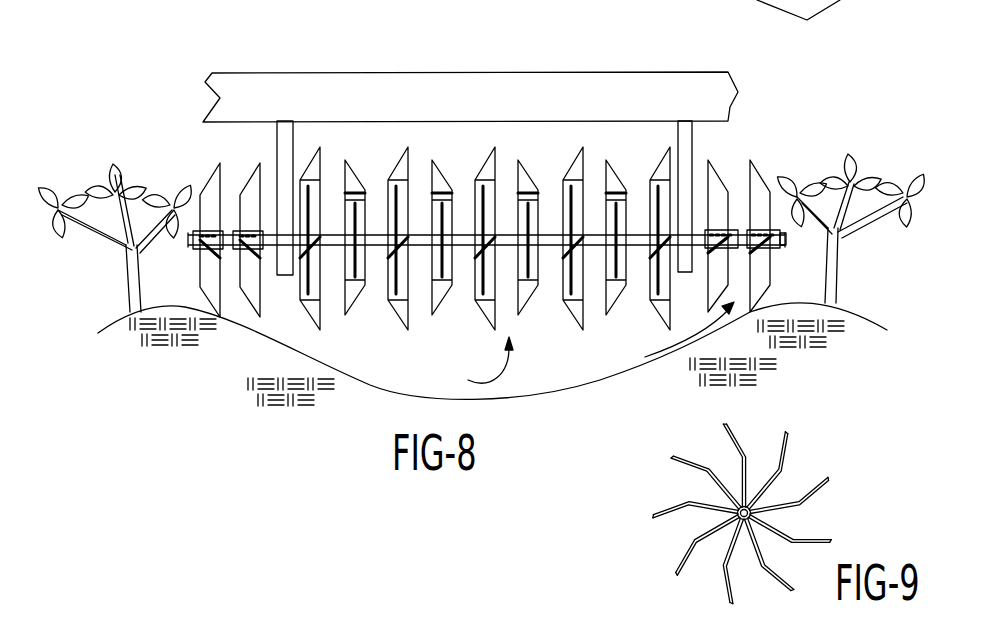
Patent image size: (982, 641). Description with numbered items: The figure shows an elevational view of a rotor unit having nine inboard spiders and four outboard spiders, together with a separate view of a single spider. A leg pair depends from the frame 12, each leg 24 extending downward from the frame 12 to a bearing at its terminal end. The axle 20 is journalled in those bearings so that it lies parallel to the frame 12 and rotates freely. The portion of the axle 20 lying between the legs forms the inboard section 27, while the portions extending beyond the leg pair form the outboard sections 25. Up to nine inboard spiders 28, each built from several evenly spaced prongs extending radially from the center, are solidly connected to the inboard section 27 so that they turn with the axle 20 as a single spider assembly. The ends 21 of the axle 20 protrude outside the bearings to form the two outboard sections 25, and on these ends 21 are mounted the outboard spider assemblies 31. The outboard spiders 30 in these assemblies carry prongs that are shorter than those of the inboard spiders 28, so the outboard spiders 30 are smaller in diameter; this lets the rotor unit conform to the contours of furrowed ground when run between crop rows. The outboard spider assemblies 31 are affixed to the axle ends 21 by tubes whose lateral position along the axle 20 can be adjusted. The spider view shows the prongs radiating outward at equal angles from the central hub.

The frame 12 is at (453, 82).
The leg 24 is at (278, 137).
The axle 20 is at (643, 247).
The ends of axle 21 is at (786, 238).
The outboard section 25 is at (676, 337).
The inboard section 27 is at (479, 362).
The inboard spiders 28 is at (437, 190).
The outboard spiders 30 is at (200, 270).
The outboard spider assemblies 31 is at (202, 170).